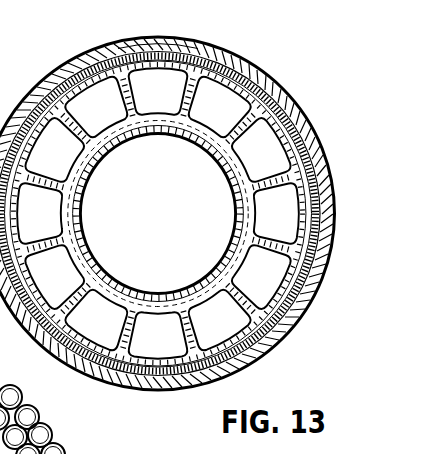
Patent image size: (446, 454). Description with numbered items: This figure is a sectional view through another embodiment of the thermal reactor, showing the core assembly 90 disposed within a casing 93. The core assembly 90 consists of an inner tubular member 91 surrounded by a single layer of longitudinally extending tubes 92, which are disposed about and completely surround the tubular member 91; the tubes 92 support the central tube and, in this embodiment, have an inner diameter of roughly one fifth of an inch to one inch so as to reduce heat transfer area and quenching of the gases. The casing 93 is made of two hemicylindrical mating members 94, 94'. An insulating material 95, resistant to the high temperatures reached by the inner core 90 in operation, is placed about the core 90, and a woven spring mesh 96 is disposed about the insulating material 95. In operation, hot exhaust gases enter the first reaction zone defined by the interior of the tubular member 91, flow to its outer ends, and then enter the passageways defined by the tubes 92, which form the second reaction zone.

The core assembly 90 is at (164, 176).
The inner tubular member 91 is at (75, 228).
The tubes 92 is at (246, 147).
The casing 93 is at (288, 100).
The hemicylindrical mating member 94 is at (160, 191).
The hemicylindrical mating member 94' is at (158, 28).
The insulating material 95 is at (313, 174).
The woven spring mesh 96 is at (330, 232).